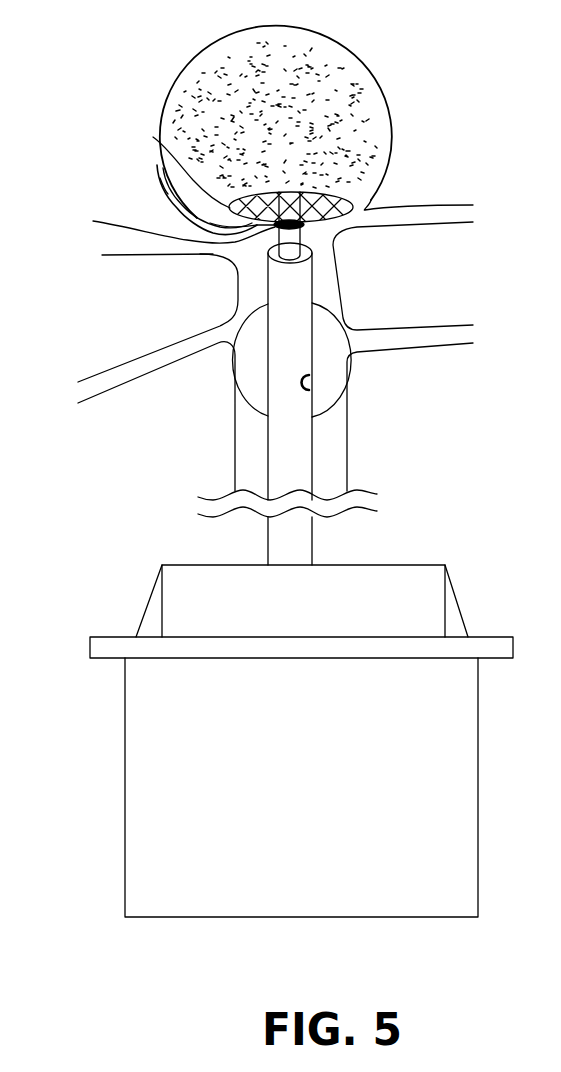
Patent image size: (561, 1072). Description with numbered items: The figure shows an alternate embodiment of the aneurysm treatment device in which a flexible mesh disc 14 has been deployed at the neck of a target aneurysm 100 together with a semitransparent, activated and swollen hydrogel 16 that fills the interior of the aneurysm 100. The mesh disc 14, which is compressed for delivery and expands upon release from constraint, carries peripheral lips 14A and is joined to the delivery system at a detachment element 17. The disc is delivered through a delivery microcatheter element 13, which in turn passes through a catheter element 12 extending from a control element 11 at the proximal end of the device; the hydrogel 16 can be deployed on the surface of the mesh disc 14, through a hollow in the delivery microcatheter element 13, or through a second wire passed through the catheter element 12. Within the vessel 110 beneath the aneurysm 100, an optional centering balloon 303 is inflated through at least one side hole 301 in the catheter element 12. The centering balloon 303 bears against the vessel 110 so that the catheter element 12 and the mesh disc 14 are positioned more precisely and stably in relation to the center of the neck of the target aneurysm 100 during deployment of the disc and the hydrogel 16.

The target aneurysm 100 is at (176, 76).
The hydrogel 16 is at (225, 117).
The mesh disc 14 is at (153, 137).
The peripheral lips 14A is at (160, 178).
The detachment element 17 is at (210, 223).
The delivery microcatheter element 13 is at (268, 253).
The vessel 110 is at (233, 312).
The centering balloon 303 is at (340, 358).
The side hole 301 is at (308, 381).
The catheter element 12 is at (268, 463).
The control element 11 is at (125, 790).